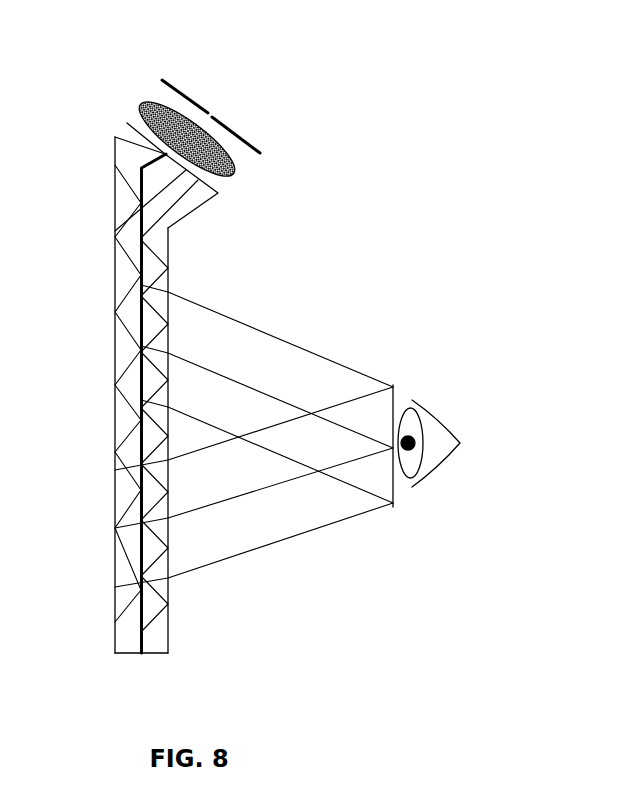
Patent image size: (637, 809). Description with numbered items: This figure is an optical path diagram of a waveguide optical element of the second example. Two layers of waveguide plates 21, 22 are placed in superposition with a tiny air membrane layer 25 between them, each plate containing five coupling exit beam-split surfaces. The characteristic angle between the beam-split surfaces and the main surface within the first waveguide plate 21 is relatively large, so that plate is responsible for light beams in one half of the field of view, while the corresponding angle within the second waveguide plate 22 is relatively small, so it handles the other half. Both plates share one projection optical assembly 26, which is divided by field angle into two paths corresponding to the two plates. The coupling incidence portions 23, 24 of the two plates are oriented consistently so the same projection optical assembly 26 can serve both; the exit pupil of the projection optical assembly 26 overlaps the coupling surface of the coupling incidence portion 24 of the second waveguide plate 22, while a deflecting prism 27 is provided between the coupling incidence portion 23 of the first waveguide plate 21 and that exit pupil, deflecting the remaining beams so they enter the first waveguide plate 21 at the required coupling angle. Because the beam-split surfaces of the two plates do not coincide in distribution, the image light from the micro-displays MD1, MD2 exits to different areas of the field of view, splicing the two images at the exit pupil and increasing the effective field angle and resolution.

The first waveguide plate 21 is at (123, 640).
The second waveguide plate 22 is at (157, 640).
The coupling incidence portion of the first waveguide plate 23 is at (125, 163).
The coupling incidence portion of the second waveguide plate 24 is at (192, 195).
The air membrane layer 25 is at (140, 630).
The projection optical assembly 26 is at (140, 109).
The deflecting prism 27 is at (127, 128).
The micro-display MD1 is at (183, 95).
The micro-display MD2 is at (242, 145).